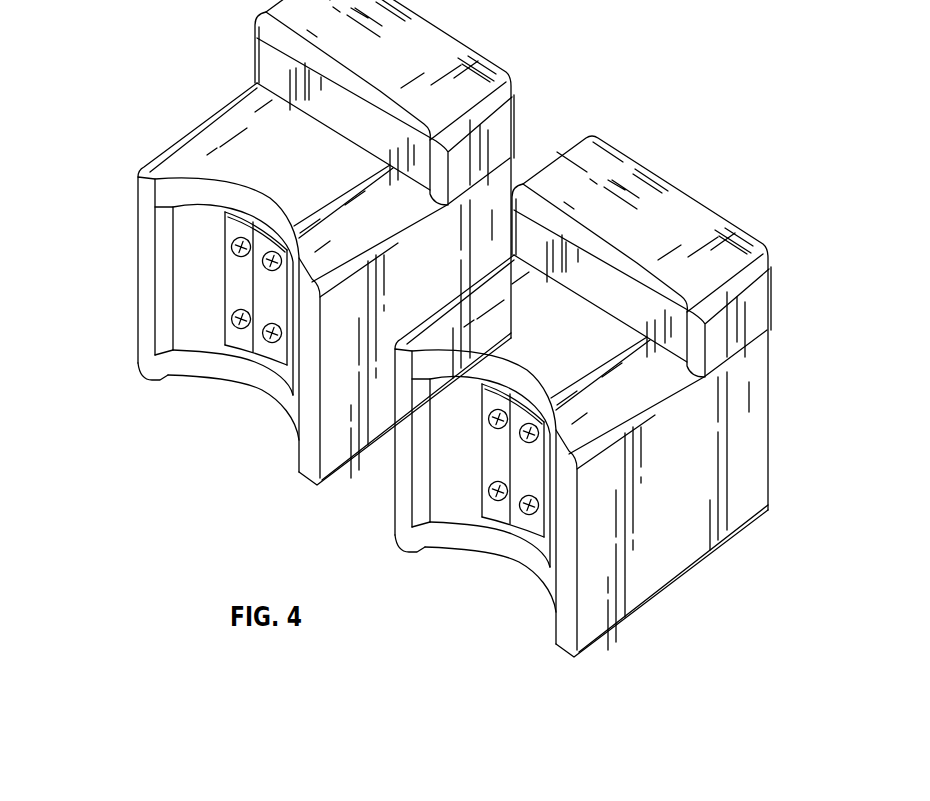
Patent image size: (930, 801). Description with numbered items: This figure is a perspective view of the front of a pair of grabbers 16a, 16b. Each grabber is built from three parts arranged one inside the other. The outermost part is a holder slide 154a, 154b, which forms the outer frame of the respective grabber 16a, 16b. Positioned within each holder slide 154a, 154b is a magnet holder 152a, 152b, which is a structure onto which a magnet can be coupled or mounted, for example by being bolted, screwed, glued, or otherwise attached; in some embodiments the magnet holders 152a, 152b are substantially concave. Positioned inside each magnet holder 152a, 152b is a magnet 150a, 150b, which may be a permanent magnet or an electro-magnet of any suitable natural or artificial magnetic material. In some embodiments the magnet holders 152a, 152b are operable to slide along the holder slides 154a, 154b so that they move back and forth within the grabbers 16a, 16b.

The grabber 16a is at (292, 406).
The grabber 16b is at (551, 580).
The magnet 150a is at (257, 278).
The magnet 150b is at (517, 449).
The magnet holder 152a is at (222, 330).
The magnet holder 152b is at (481, 502).
The holder slide 154a is at (306, 463).
The holder slide 154b is at (566, 637).